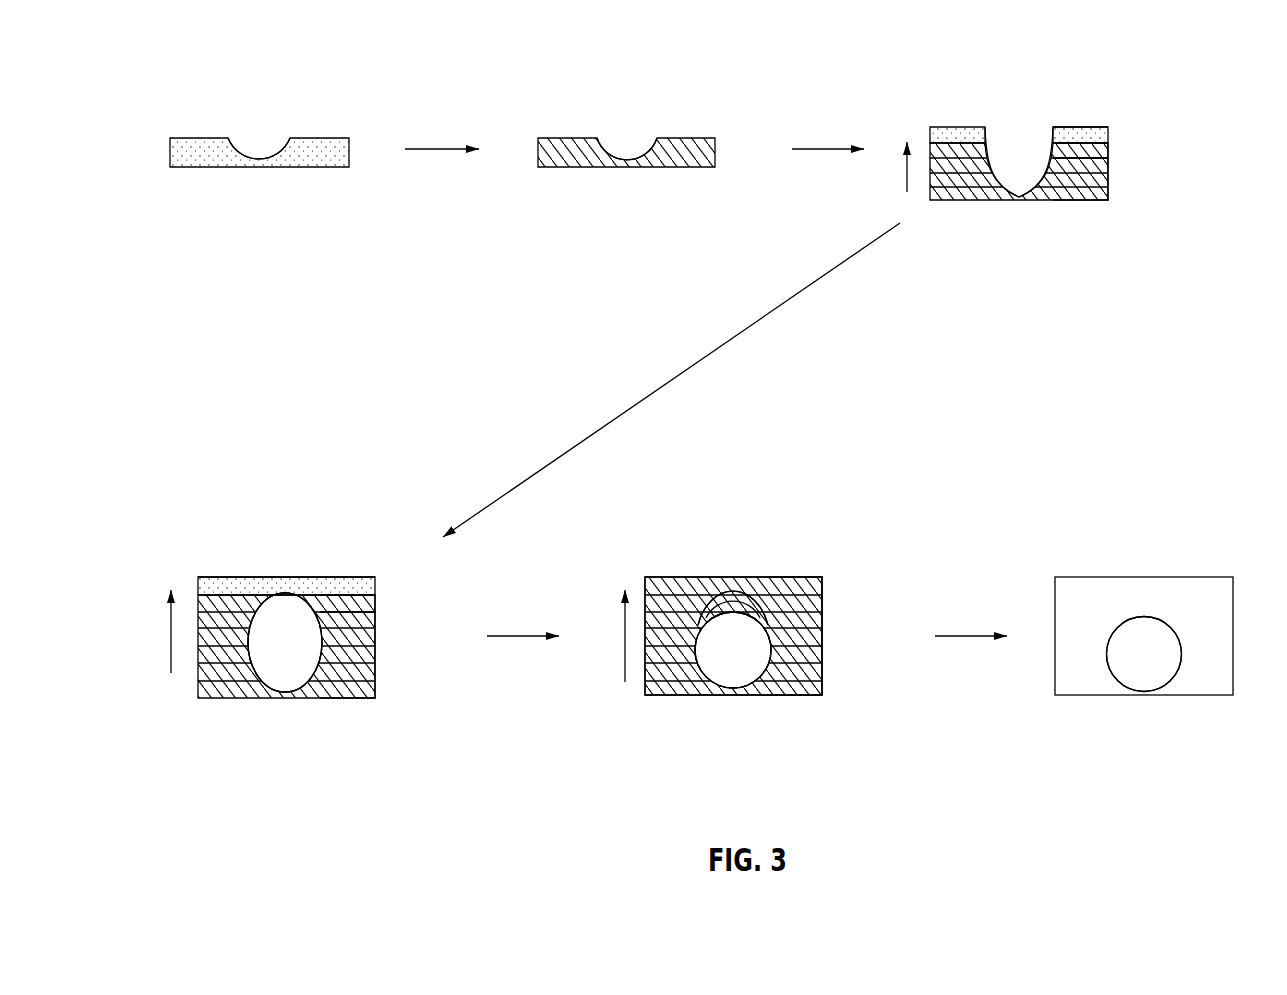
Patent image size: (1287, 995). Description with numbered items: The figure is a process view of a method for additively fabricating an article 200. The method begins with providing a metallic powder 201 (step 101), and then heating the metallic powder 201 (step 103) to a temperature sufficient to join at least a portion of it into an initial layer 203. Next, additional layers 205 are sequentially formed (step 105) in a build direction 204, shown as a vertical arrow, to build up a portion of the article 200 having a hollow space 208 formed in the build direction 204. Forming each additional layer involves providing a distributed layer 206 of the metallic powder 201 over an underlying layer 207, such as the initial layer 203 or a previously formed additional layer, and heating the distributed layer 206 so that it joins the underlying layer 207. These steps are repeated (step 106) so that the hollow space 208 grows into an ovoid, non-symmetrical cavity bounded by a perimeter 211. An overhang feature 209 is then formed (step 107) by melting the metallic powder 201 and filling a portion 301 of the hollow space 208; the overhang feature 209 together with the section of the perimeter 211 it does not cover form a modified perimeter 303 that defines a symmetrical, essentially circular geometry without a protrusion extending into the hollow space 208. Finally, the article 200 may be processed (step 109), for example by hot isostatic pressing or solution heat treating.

The providing step 101 is at (157, 110).
The heating step 103 is at (429, 146).
The sequentially forming step 105 is at (819, 146).
The repeating step 106 is at (682, 366).
The overhang feature forming step 107 is at (507, 631).
The processing step 109 is at (956, 632).
The article 200 is at (667, 564).
The metallic powder 201 is at (170, 148).
The initial layer 203 is at (538, 149).
The build direction 204 is at (907, 172).
The additional layers 205 is at (1108, 148).
The distributed layer 206 is at (1078, 127).
The underlying layer 207 is at (1108, 146).
The hollow space 208 is at (257, 145).
The overhang feature 209 is at (725, 618).
The perimeter 211 is at (270, 678).
The portion 301 is at (285, 607).
The modified perimeter 303 is at (718, 679).